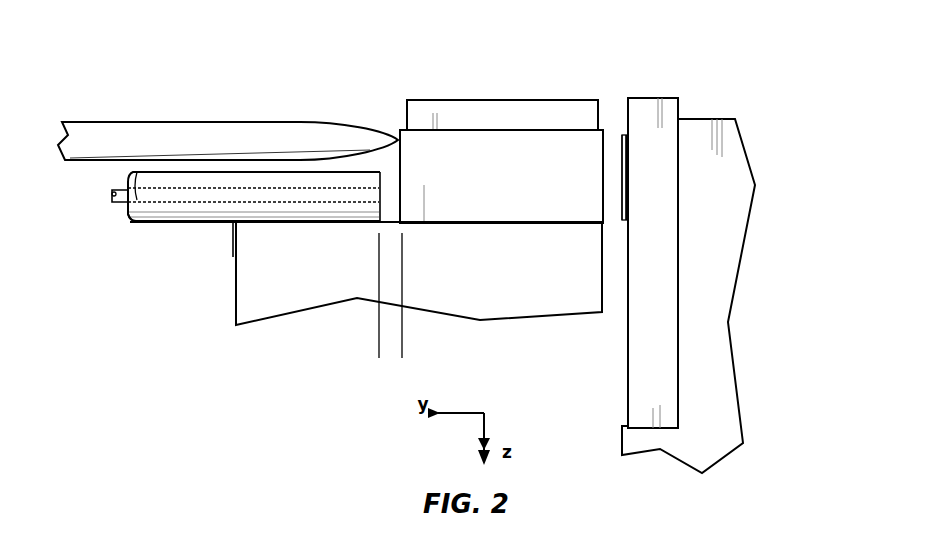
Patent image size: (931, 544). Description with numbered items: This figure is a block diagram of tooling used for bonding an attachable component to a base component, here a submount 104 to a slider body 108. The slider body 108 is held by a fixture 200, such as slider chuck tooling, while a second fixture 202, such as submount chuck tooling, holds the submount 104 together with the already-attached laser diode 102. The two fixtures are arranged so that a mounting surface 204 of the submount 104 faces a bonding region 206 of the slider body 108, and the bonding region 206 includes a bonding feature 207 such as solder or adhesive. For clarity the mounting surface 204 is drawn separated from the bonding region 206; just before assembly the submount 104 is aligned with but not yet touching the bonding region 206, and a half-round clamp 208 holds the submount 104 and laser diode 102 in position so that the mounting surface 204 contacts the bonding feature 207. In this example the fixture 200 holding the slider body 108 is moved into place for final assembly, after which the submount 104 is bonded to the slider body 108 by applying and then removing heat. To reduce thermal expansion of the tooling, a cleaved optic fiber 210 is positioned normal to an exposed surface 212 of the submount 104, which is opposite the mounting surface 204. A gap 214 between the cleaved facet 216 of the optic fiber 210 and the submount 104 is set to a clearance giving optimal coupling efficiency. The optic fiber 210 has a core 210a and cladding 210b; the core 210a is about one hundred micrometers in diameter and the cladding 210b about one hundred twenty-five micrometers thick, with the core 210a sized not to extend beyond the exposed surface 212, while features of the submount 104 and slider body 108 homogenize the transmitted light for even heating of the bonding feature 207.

The fixture 200 is at (738, 152).
The slider body 108 is at (655, 98).
The bonding region 206 is at (623, 134).
The bonding feature 207 is at (620, 139).
The laser diode 102 is at (528, 108).
The submount 104 is at (516, 183).
The mounting surface 204 is at (605, 212).
The fixture 202 is at (480, 312).
The gap 214 is at (414, 345).
The exposed surface 212 is at (401, 162).
The cleaved facet 216 is at (380, 192).
The half-round clamp 208 is at (267, 127).
The cleaved optic fiber 210 is at (180, 218).
The core 210a is at (112, 201).
The cladding 210b is at (128, 220).